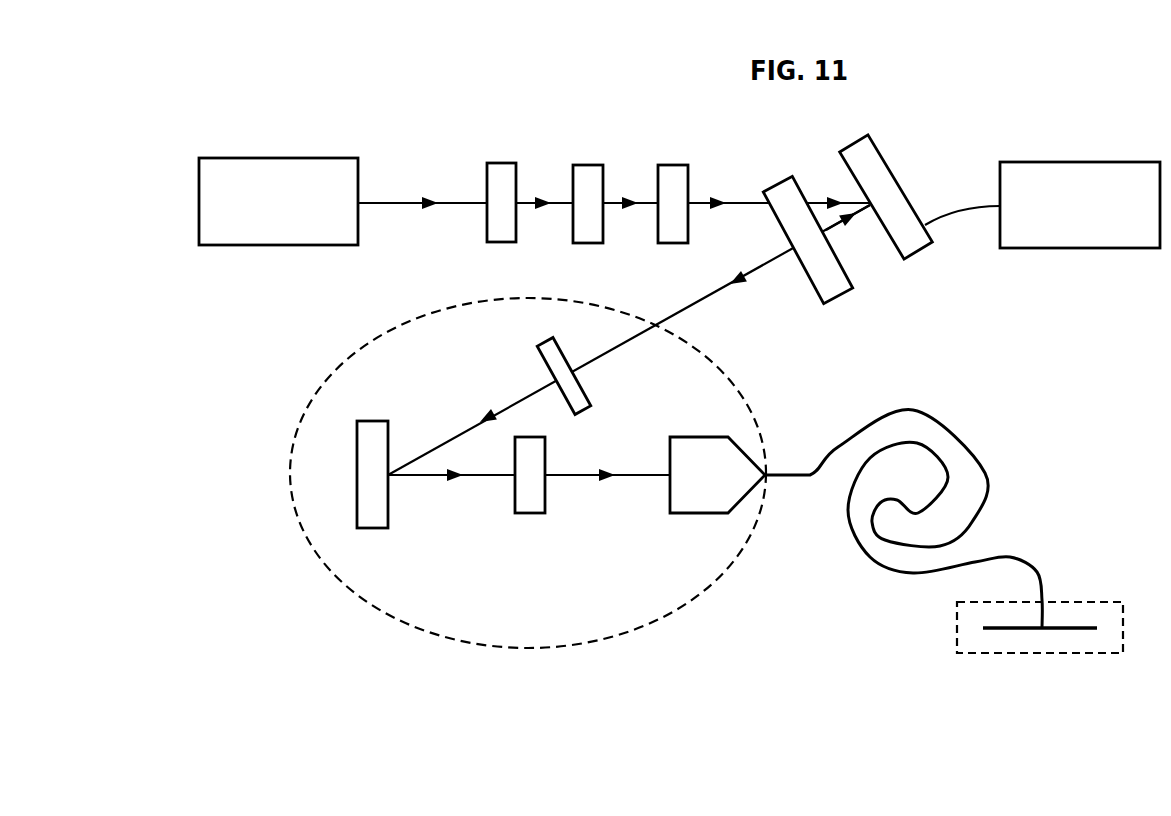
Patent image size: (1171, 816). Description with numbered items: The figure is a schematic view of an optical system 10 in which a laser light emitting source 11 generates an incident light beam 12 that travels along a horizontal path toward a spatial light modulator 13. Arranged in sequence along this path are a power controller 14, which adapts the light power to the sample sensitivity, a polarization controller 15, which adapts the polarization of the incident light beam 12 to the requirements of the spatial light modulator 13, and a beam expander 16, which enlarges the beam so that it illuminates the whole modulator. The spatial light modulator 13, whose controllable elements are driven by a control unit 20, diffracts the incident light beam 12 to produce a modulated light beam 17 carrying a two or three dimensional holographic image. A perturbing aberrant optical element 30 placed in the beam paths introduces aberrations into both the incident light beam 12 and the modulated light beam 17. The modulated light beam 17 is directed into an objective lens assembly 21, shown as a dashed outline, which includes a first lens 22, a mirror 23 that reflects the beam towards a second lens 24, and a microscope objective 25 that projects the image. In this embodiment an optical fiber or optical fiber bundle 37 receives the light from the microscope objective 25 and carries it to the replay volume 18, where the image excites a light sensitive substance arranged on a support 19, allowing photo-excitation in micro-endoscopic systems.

The optical system 10 is at (263, 307).
The laser light emitting source 11 is at (277, 172).
The incident light beam 12 is at (397, 200).
The spatial light modulator 13 is at (886, 198).
The power controller 14 is at (502, 228).
The polarization controller 15 is at (587, 230).
The beam expander 16 is at (672, 230).
The modulated light beam 17 is at (827, 232).
The replay volume 18 is at (1040, 653).
The support 19 is at (1078, 630).
The control unit 20 is at (1080, 178).
The objective lens assembly 21 is at (527, 652).
The first lens 22 is at (578, 395).
The mirror 23 is at (372, 517).
The second lens 24 is at (530, 505).
The microscope objective 25 is at (700, 500).
The perturbing aberrant optical element 30 is at (823, 273).
The optical fiber or optical fiber bundle 37 is at (983, 477).